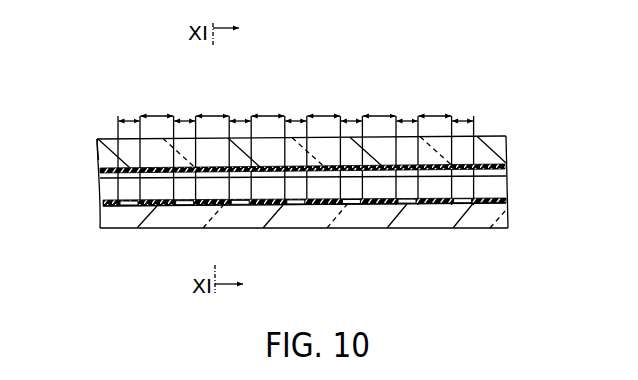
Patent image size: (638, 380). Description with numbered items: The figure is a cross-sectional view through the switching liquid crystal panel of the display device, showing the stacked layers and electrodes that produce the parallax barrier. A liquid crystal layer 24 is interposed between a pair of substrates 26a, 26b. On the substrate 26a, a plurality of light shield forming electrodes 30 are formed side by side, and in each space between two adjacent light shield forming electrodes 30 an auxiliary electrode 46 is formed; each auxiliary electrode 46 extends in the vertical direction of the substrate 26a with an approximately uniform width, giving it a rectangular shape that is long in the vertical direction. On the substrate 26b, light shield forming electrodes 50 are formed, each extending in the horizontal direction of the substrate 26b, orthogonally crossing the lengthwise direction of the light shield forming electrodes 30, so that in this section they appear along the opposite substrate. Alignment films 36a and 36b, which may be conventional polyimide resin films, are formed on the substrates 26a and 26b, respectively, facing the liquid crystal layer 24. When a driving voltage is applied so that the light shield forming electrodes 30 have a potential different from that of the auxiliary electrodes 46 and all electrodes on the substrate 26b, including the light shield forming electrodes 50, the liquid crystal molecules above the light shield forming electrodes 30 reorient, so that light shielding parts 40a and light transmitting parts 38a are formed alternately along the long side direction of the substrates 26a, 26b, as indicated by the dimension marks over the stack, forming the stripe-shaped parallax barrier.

The liquid crystal layer 24 is at (500, 182).
The substrate 26a is at (105, 229).
The substrate 26b is at (500, 135).
The light shield forming electrode 30 is at (103, 203).
The alignment film 36a is at (506, 200).
The alignment film 36b is at (100, 171).
The light transmitting part 38a is at (131, 119).
The light shielding part 40a is at (159, 114).
The auxiliary electrode 46 is at (131, 206).
The light shield forming electrode 50 is at (98, 138).